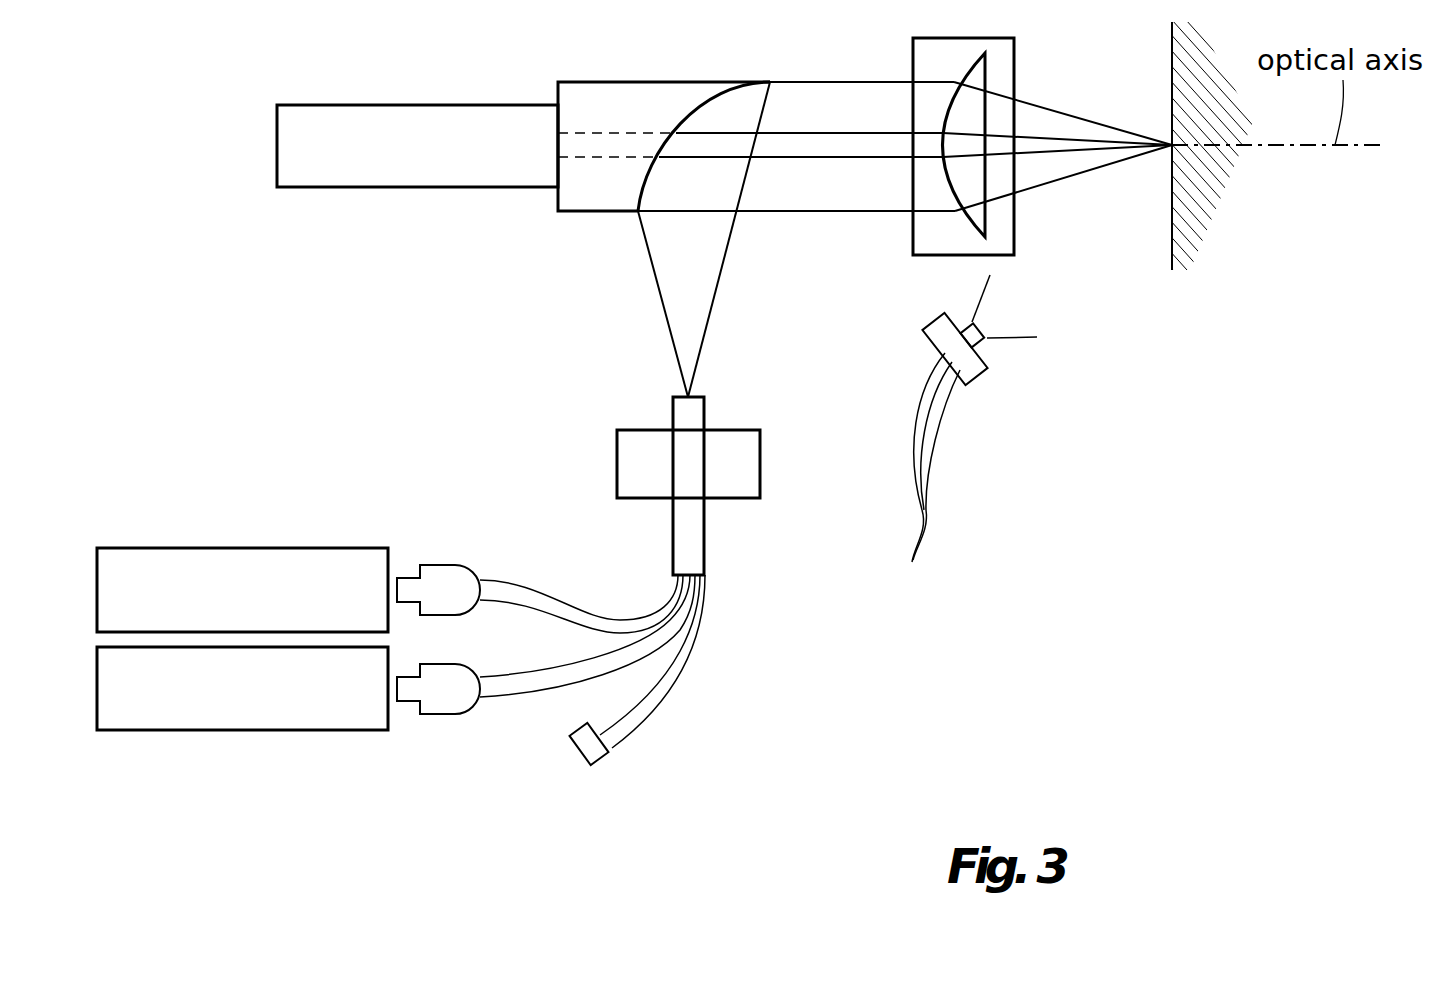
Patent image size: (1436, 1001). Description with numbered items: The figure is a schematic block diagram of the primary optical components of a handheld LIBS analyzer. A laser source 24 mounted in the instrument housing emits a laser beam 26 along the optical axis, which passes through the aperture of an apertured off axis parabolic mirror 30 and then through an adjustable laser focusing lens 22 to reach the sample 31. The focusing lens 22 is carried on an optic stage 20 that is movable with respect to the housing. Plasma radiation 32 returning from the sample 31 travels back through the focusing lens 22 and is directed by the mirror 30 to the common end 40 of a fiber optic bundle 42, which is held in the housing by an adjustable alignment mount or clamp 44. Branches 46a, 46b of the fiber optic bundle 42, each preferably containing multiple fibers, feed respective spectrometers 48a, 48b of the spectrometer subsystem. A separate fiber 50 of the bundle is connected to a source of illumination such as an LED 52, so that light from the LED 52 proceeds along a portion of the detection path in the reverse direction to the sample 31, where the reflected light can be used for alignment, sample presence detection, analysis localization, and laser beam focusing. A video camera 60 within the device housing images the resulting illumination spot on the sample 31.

The laser source 24 is at (468, 113).
The apertured off axis parabolic mirror 30 is at (620, 80).
The laser beam 26 is at (822, 135).
The plasma radiation 32 is at (798, 213).
The optic stage 20 is at (1015, 218).
The laser focusing lens 22 is at (972, 218).
The sample 31 is at (1172, 235).
The video camera 60 is at (975, 375).
The common end 40 is at (700, 395).
The adjustable alignment mount or clamp 44 is at (648, 428).
The fiber optic bundle 42 is at (622, 590).
The branch 46a is at (533, 602).
The branch 46b is at (510, 687).
The spectrometer 48a is at (240, 548).
The spectrometer 48b is at (236, 732).
The fiber 50 is at (668, 675).
The LED 52 is at (600, 760).